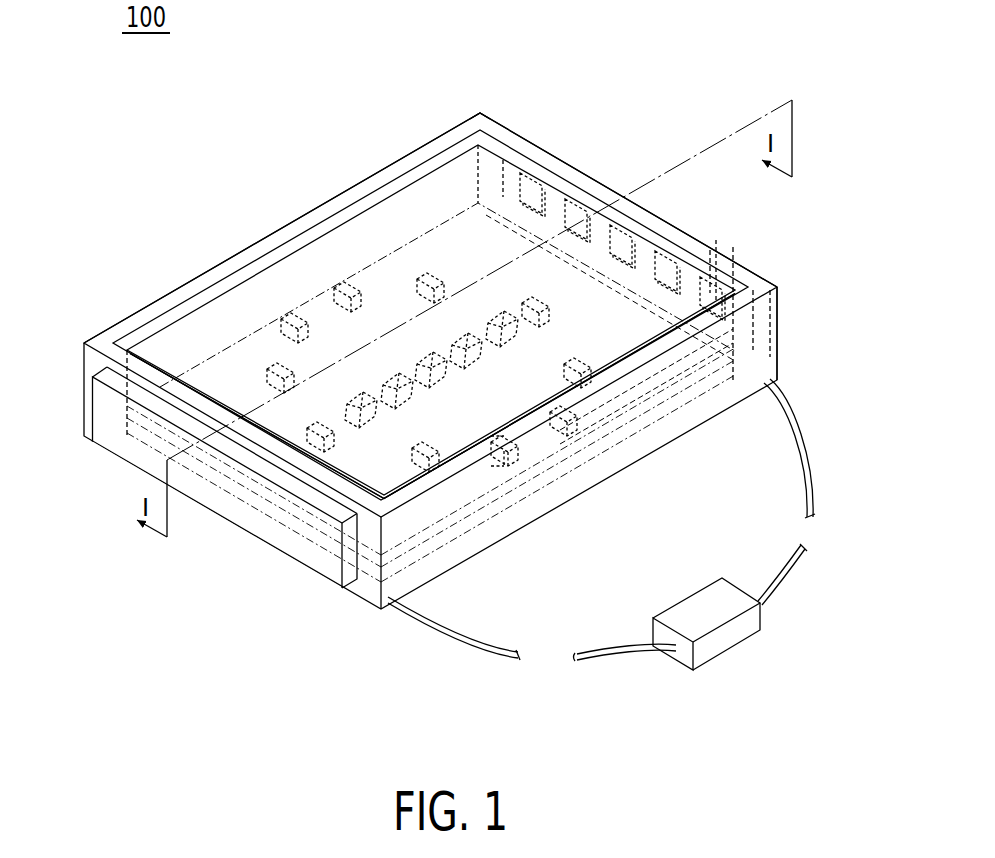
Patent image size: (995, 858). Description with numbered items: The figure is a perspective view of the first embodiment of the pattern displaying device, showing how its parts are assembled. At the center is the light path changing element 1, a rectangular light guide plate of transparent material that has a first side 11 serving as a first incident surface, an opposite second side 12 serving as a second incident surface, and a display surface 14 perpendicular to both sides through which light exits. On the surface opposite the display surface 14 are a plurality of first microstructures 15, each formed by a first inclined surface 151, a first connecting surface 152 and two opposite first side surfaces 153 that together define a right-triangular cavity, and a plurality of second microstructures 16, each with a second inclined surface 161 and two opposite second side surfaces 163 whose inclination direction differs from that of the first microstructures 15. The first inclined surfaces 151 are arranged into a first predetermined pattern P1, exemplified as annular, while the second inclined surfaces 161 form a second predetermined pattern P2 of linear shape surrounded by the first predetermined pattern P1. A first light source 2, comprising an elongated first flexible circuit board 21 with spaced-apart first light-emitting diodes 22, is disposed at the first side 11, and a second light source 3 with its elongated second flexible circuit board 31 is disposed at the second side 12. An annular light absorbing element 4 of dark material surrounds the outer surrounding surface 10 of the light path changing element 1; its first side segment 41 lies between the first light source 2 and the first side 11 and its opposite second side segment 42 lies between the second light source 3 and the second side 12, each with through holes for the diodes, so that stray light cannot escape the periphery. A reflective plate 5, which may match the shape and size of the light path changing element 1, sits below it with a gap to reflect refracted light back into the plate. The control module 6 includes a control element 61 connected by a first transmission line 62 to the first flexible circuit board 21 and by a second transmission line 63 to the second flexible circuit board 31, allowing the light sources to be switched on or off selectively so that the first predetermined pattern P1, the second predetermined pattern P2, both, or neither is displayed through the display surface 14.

The light path changing element 1 is at (513, 163).
The outer surrounding surface 10 is at (476, 140).
The first side 11 is at (483, 134).
The second side 12 is at (350, 480).
The display surface 14 is at (443, 430).
The first microstructures 15 is at (536, 463).
The first inclined surface 151 is at (559, 453).
The first connecting surface 152 is at (503, 473).
The first side surfaces 153 is at (515, 466).
The second microstructures 16 is at (597, 393).
The second inclined surface 161 is at (390, 380).
The second side surfaces 163 is at (536, 458).
The first light source 2 is at (737, 258).
The first flexible circuit board 21 is at (765, 273).
The first light-emitting diodes 22 is at (716, 240).
The second light source 3 is at (117, 445).
The second flexible circuit board 31 is at (143, 458).
The light absorbing element 4 is at (235, 241).
The first side segment 41 is at (562, 192).
The second side segment 42 is at (297, 453).
The reflective plate 5 is at (697, 392).
The control module 6 is at (722, 673).
The control element 61 is at (737, 630).
The first transmission line 62 is at (800, 448).
The second transmission line 63 is at (460, 637).
The first predetermined pattern P1 is at (263, 363).
The second predetermined pattern P2 is at (347, 307).